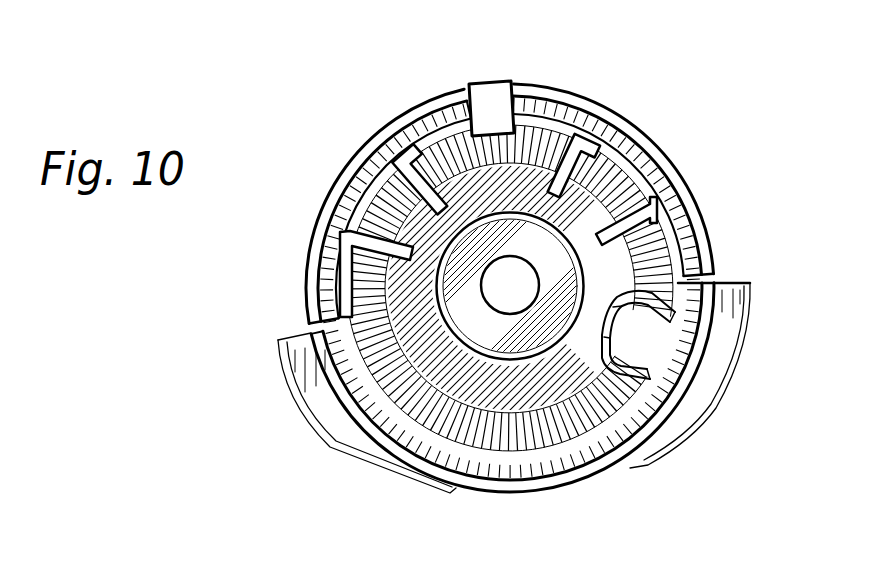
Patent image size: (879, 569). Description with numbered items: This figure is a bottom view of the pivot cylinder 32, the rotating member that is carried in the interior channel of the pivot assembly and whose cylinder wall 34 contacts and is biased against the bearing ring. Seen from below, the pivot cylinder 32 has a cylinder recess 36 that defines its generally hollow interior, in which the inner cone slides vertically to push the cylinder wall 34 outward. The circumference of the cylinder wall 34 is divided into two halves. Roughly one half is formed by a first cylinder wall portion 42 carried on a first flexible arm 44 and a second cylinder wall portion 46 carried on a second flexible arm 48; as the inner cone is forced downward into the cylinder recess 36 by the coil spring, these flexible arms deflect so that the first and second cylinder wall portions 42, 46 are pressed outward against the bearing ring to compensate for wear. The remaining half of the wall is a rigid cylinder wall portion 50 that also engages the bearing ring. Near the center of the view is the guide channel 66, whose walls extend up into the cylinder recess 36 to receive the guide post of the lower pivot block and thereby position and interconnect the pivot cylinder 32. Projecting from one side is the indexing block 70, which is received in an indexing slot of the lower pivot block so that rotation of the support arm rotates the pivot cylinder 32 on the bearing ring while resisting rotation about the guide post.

The pivot cylinder 32 is at (750, 328).
The cylinder wall 34 is at (307, 290).
The cylinder recess 36 is at (620, 264).
The first cylinder wall portion 42 is at (602, 98).
The first flexible arm 44 is at (615, 170).
The second cylinder wall portion 46 is at (348, 230).
The second flexible arm 48 is at (382, 189).
The rigid cylinder wall portion 50 is at (598, 476).
The guide channel 66 is at (510, 320).
The indexing block 70 is at (483, 84).